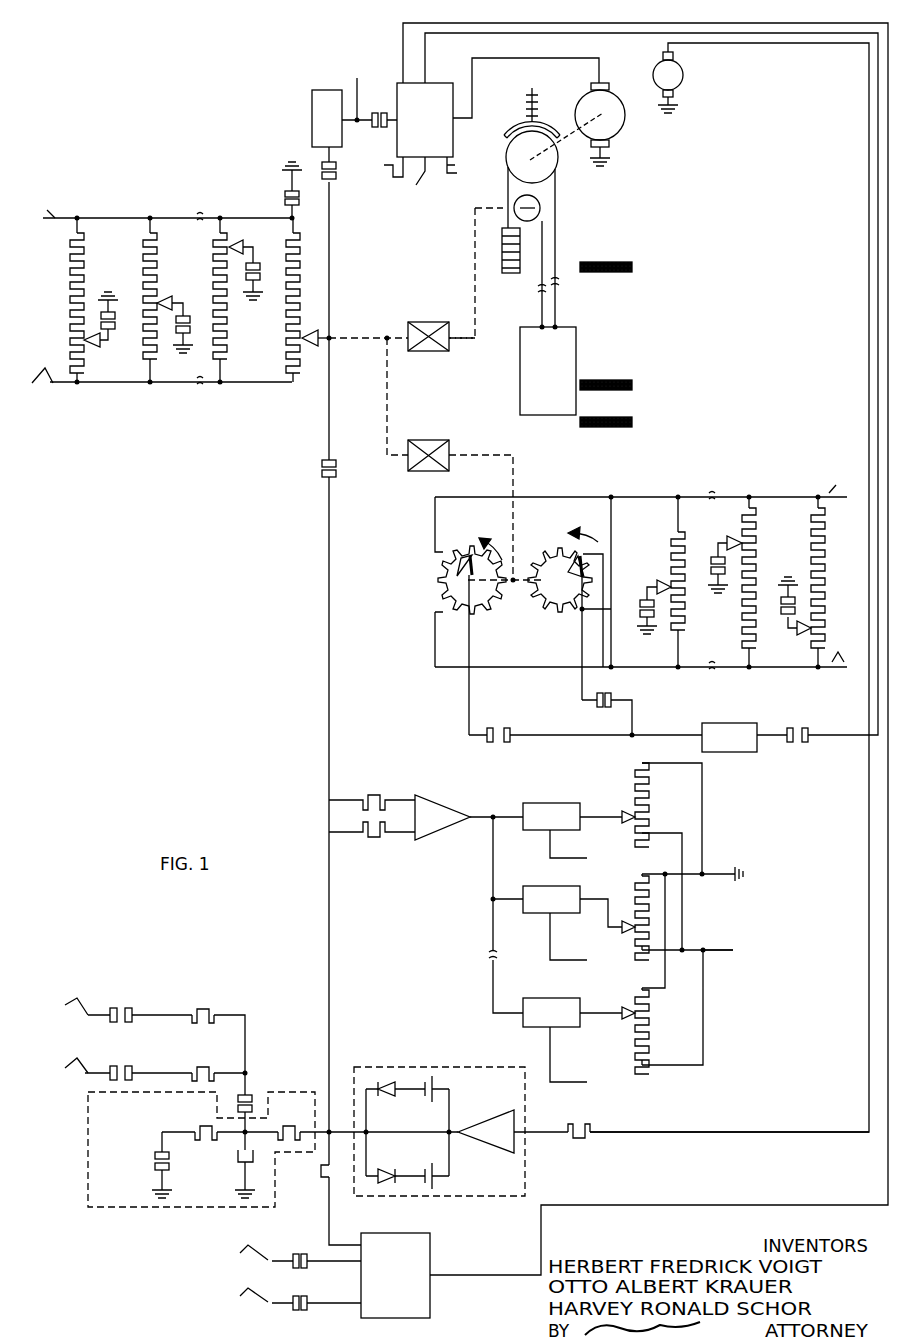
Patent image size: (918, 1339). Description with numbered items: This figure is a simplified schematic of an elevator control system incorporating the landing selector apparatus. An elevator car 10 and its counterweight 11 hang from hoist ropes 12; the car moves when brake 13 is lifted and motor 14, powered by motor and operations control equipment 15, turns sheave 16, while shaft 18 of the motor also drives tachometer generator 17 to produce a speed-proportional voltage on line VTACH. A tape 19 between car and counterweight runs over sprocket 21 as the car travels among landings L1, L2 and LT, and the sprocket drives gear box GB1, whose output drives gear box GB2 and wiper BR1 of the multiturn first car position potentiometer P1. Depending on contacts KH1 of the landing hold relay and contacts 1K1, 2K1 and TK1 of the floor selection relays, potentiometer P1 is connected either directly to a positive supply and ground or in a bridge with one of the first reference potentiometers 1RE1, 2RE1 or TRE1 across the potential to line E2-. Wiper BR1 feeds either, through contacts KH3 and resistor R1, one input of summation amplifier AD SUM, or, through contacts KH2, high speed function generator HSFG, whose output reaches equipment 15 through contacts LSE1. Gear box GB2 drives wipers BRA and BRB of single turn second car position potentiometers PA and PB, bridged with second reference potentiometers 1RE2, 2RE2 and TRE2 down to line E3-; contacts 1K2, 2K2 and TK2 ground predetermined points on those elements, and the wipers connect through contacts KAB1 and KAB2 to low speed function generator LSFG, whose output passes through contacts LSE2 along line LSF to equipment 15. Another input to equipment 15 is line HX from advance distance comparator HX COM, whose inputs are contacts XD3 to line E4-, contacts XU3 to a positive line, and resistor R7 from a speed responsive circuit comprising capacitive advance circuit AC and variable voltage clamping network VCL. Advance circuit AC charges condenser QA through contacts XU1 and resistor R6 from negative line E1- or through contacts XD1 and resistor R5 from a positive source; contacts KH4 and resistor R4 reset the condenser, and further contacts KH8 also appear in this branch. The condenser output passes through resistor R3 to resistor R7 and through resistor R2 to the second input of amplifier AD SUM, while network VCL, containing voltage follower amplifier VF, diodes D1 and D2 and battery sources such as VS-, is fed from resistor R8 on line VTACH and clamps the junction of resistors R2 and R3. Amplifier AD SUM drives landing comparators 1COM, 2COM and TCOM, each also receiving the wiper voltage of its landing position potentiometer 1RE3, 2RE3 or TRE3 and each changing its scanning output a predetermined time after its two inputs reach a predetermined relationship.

The high speed function generator HSFG is at (310, 110).
The contacts LSE1 is at (382, 112).
The motor and operations control equipment 15 is at (425, 120).
The line HX is at (458, 24).
The line LSF is at (570, 35).
The line VTACH is at (712, 1142).
The brake 13 is at (538, 100).
The sheave 16 is at (566, 162).
The shaft 18 is at (640, 92).
The motor 14 is at (623, 130).
The tachometer generator 17 is at (683, 75).
The contacts KH2 is at (340, 176).
The contacts KH1 is at (286, 194).
The sprocket 21 is at (540, 206).
The counterweight 11 is at (500, 268).
The tape 19 is at (542, 270).
The hoist ropes 12 is at (557, 221).
The elevator car 10 is at (548, 371).
The top landing LT is at (619, 272).
The second landing L2 is at (620, 387).
The first landing L1 is at (620, 424).
The gear box GB1 is at (434, 322).
The gear box GB2 is at (434, 440).
The contacts KH3 is at (321, 467).
The line E2- is at (38, 205).
The first reference potentiometer 1RE1 is at (70, 276).
The contacts 1K1 is at (120, 313).
The first reference potentiometer 2RE1 is at (142, 332).
The contacts 2K1 is at (200, 326).
The first reference potentiometer TRE1 is at (214, 283).
The contacts TK1 is at (262, 266).
The multiturn first car position potentiometer P1 is at (285, 338).
The sliding contact BR1 is at (313, 351).
The line E3- is at (830, 671).
The rotary single turn second car position potentiometer PA is at (488, 614).
The rotary single turn second car position potentiometer PB is at (545, 612).
The wiper BRA is at (460, 568).
The wiper BRB is at (572, 561).
The second reference potentiometer TRE2 is at (672, 542).
The contacts TK2 is at (637, 603).
The second reference potentiometer 2RE2 is at (742, 614).
The contacts 2K2 is at (698, 558).
The second reference potentiometer 1RE2 is at (813, 640).
The contacts 1K2 is at (777, 603).
The contacts KAB1 is at (500, 721).
The contacts KAB2 is at (613, 689).
The low speed function generator LSFG is at (729, 737).
The contacts LSE2 is at (800, 719).
The resistor R1 is at (368, 798).
The resistor R2 is at (368, 838).
The summation amplifier AD SUM is at (433, 821).
The landing comparator 1COM is at (579, 816).
The landing comparator 2COM is at (579, 909).
The landing comparator TCOM is at (579, 1012).
The landing position potentiometer 1RE3 is at (633, 776).
The landing position potentiometer 2RE3 is at (635, 897).
The landing position potentiometer TRE3 is at (635, 1023).
The line E1- is at (58, 1012).
The contacts XU1 is at (122, 1005).
The resistor R6 is at (199, 1012).
The contacts XD1 is at (122, 1063).
The resistor R5 is at (199, 1070).
The relay contact KH8 is at (253, 1100).
The capacitive advance circuit AC is at (88, 1151).
The contacts KH4 is at (155, 1161).
The resistor R4 is at (205, 1127).
The condenser QA is at (238, 1152).
The resistor R3 is at (288, 1127).
The resistor R7 is at (322, 1173).
The variable voltage clamping network VCL is at (432, 1066).
The diode D1 is at (384, 1099).
The negative potential voltage source VS- is at (428, 1096).
The diode D2 is at (382, 1164).
The voltage follower amplifier VF is at (486, 1131).
The resistor R8 is at (575, 1128).
The advance distance comparator HX COM is at (395, 1275).
The contacts XD3 is at (299, 1247).
The contacts XU3 is at (299, 1292).
The line E4- is at (239, 1258).